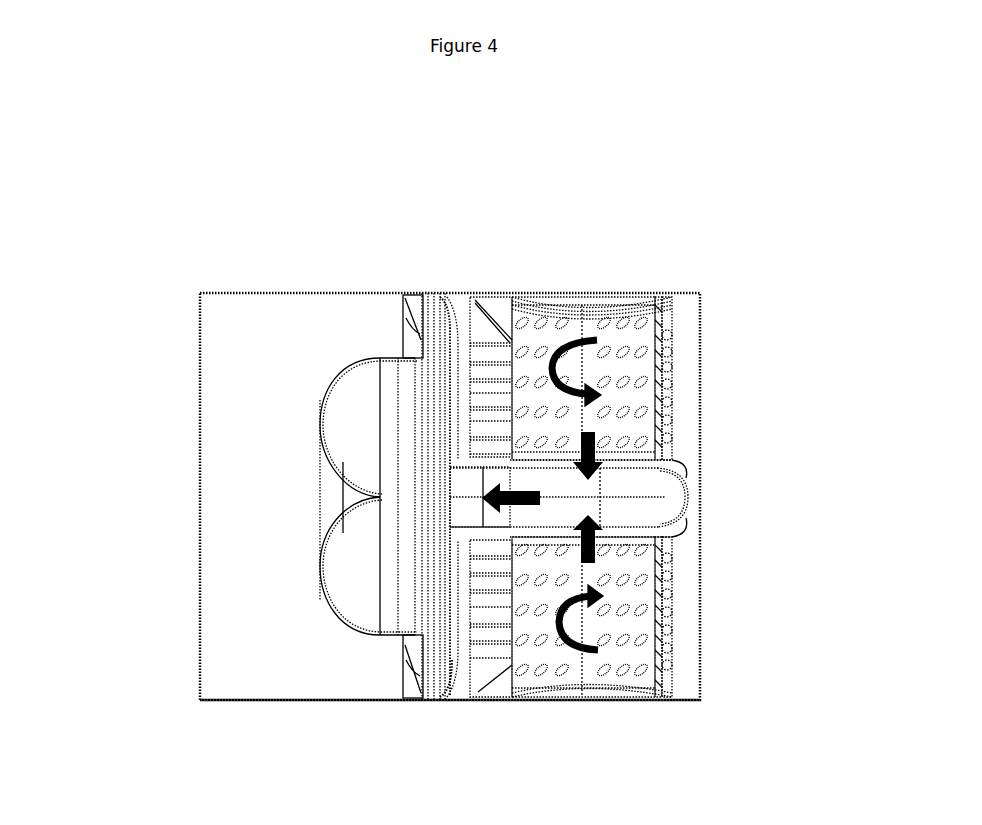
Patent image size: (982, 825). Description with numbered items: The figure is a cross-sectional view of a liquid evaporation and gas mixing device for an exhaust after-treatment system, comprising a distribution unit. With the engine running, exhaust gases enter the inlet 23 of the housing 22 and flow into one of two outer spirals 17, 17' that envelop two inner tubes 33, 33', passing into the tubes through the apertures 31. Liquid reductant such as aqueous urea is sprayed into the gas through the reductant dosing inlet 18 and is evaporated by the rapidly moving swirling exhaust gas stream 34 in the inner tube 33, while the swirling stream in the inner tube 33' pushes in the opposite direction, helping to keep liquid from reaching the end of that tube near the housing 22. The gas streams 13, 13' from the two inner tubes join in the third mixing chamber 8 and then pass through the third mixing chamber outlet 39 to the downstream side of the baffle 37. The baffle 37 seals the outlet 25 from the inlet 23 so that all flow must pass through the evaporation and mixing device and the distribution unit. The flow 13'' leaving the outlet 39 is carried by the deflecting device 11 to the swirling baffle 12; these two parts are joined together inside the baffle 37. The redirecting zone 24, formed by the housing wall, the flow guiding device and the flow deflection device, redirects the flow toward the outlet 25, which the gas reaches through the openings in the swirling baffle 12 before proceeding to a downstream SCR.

The third mixing chamber 8 is at (675, 470).
The deflecting device 11 is at (323, 552).
The swirling baffle 12 is at (510, 437).
The gas stream 13 is at (327, 472).
The gas stream 13' is at (491, 536).
The flow 13'' is at (435, 535).
The outer spiral 17 is at (688, 392).
The outer spiral 17' is at (693, 606).
The reductant dosing inlet 18 is at (590, 305).
The housing 22 is at (330, 700).
The inlet 23 is at (680, 482).
The redirecting zone 24 is at (323, 590).
The outlet 25 is at (200, 518).
The apertures 31 is at (672, 328).
The inner tube 33 is at (567, 349).
The inner tube 33' is at (583, 651).
The swirling exhaust gas stream 34 is at (588, 300).
The baffle 37 is at (428, 340).
The third mixing chamber outlet 39 is at (450, 488).